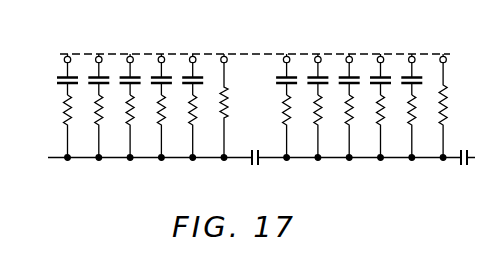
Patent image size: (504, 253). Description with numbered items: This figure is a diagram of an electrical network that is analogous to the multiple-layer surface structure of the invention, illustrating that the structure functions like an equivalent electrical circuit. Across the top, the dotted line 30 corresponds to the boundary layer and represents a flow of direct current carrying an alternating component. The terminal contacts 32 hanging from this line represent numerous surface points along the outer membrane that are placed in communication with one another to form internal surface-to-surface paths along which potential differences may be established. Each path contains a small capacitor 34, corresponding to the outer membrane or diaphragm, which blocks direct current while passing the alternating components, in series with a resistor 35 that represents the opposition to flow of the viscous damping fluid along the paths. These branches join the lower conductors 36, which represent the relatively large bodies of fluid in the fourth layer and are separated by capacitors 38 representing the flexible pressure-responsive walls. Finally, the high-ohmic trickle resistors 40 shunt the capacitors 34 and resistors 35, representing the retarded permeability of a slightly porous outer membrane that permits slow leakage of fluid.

The dotted line 30 is at (245, 53).
The terminal contacts 32 is at (192, 56).
The small capacitors 34 is at (90, 77).
The resistors 35 is at (67, 113).
The lower conductors 36 is at (141, 160).
The capacitors 38 is at (260, 162).
The resistors 40 is at (226, 112).